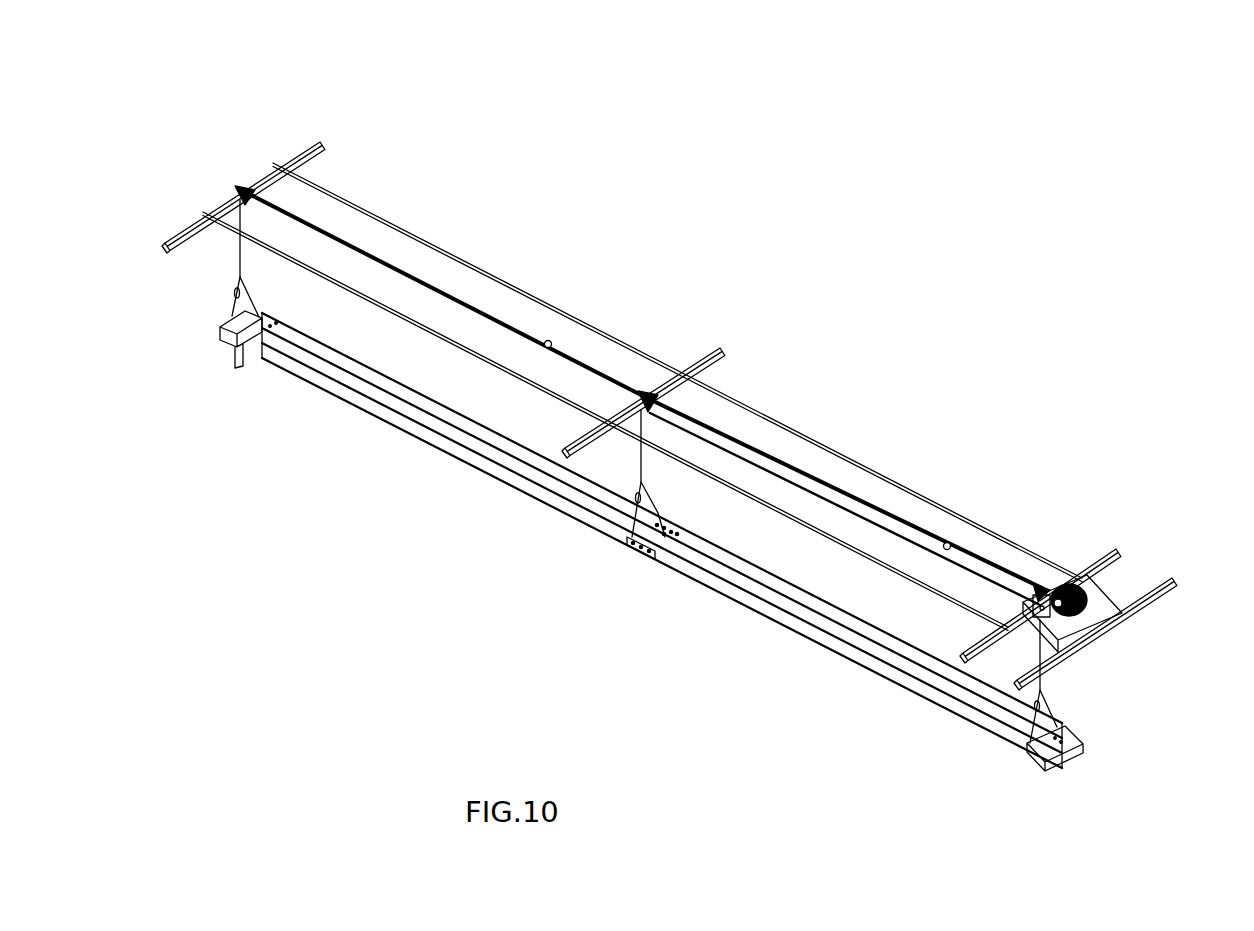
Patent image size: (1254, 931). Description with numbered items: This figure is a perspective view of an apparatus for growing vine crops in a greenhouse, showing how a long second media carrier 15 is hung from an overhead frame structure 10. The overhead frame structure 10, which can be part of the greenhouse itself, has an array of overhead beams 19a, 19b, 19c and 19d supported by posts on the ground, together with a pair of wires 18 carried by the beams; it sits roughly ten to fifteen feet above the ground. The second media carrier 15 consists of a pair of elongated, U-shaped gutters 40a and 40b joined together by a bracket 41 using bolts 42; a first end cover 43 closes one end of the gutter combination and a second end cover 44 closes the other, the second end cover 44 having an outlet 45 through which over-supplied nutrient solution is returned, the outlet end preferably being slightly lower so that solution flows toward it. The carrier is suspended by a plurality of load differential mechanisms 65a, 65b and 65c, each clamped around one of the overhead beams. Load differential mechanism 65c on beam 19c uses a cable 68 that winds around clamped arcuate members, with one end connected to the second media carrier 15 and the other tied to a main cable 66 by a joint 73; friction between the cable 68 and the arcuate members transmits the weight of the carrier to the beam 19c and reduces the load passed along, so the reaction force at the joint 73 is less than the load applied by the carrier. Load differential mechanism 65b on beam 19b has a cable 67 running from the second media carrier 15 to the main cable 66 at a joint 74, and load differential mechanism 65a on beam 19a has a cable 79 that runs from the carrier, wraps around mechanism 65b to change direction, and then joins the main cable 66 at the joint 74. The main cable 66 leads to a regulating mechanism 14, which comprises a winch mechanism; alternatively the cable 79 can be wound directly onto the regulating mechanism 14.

The overhead frame structure 10 is at (760, 365).
The regulating mechanism 14 is at (1110, 585).
The second media carrier 15 is at (746, 634).
The wires 18 is at (934, 500).
The overhead beam 19a is at (1115, 561).
The overhead beam 19b is at (721, 350).
The overhead beam 19c is at (321, 145).
The overhead beam 19d is at (1160, 592).
The gutter 40a is at (725, 588).
The gutter 40b is at (535, 492).
The bracket 41 is at (637, 551).
The bolts 42 is at (647, 554).
The first end cover 43 is at (1067, 762).
The second end cover 44 is at (220, 336).
The outlet 45 is at (237, 361).
The load differential mechanism 65a is at (1046, 580).
The load differential mechanism 65b is at (646, 380).
The load differential mechanism 65c is at (236, 170).
The main cable 66 is at (1043, 576).
The cable 67 is at (639, 472).
The cable 68 is at (320, 226).
The joint 73 is at (552, 341).
The joint 74 is at (994, 565).
The cable 79 is at (816, 492).